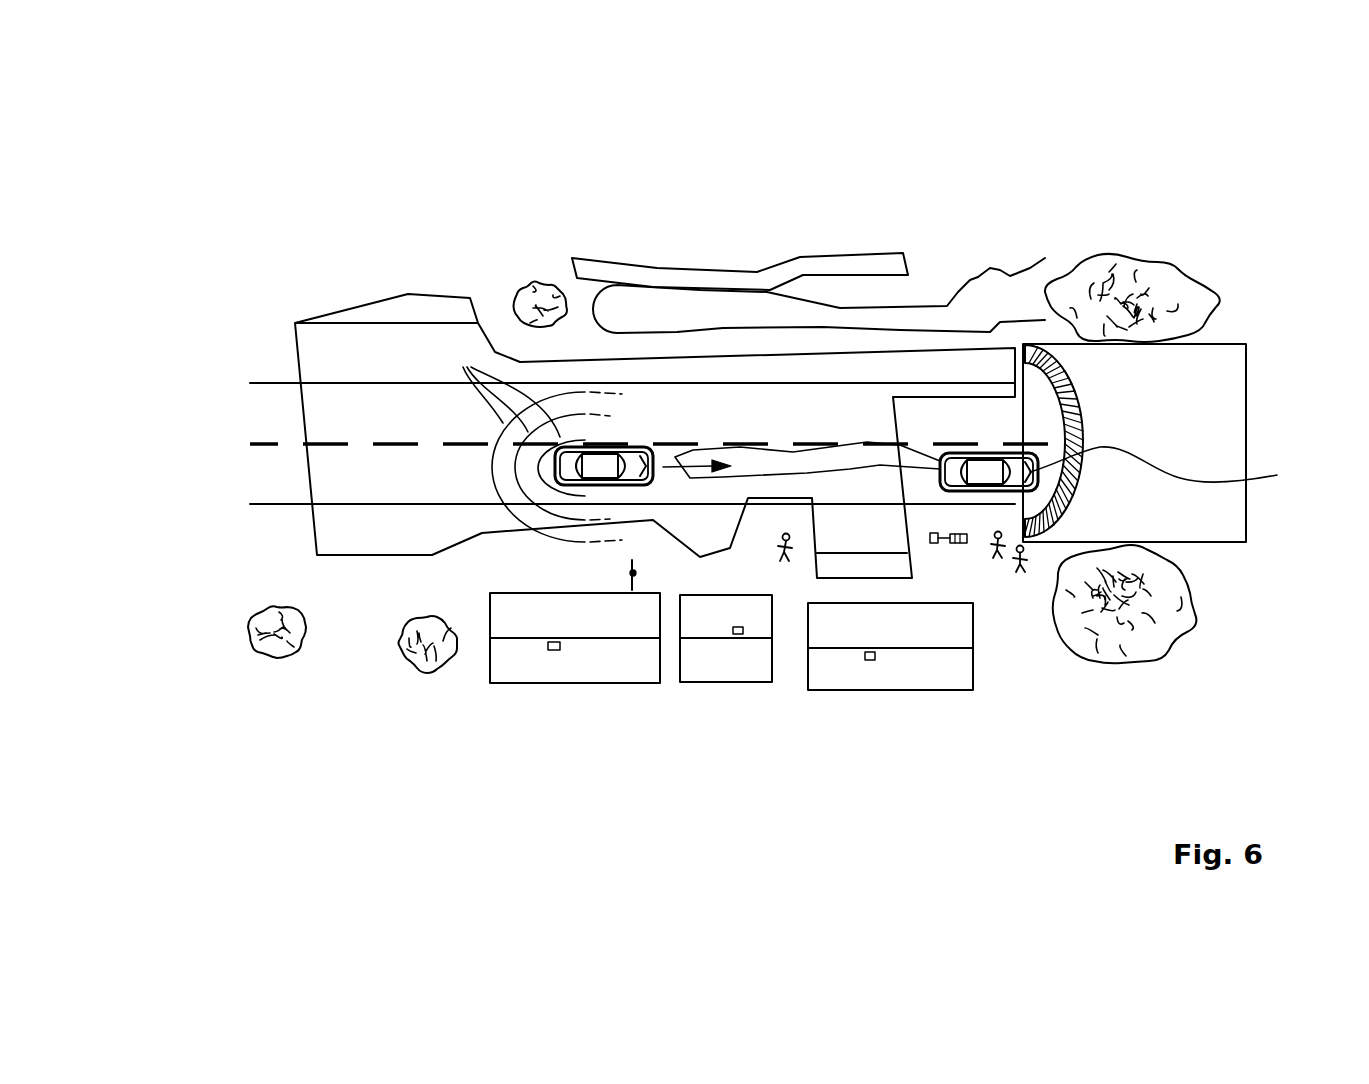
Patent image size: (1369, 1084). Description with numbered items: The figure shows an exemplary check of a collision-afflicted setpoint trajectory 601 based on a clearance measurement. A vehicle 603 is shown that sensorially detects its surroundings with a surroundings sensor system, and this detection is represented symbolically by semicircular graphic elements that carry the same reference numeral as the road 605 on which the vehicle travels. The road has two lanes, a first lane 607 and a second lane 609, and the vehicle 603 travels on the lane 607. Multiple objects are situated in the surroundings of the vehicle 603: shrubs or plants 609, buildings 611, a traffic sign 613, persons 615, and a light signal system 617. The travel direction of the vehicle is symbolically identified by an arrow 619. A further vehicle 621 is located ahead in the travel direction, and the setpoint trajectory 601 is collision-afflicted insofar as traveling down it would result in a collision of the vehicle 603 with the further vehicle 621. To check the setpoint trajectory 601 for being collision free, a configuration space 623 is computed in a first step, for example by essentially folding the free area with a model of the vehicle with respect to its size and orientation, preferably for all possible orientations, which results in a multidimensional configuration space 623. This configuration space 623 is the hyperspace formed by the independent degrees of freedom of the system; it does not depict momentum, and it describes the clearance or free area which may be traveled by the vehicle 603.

The setpoint trajectory 601 is at (775, 455).
The vehicle 603 is at (603, 450).
The road 605 is at (145, 441).
The lane 607 is at (262, 473).
The shrubs or plants 609 is at (260, 412).
The buildings 611 is at (577, 683).
The traffic sign 613 is at (630, 573).
The persons 615 is at (787, 560).
The light signal system 617 is at (955, 543).
The arrow 619 is at (678, 468).
The further vehicle 621 is at (1173, 470).
The configuration space 623 is at (800, 258).